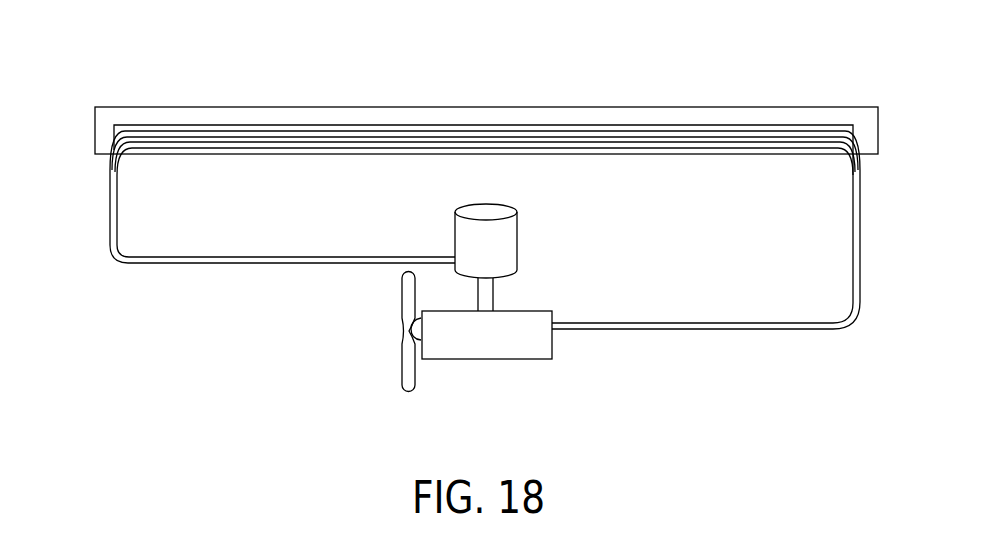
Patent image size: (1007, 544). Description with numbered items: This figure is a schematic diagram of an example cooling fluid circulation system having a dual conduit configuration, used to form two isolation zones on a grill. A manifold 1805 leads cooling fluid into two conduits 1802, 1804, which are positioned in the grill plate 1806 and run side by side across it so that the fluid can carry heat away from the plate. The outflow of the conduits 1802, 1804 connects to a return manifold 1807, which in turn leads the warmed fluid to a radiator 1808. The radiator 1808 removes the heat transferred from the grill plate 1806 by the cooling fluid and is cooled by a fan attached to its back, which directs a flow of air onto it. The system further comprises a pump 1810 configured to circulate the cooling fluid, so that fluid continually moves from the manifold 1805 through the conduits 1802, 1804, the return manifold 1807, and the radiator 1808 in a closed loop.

The conduit 1802 is at (556, 137).
The conduit 1804 is at (655, 152).
The manifold 1805 is at (101, 164).
The grill plate 1806 is at (548, 107).
The return manifold 1807 is at (868, 162).
The radiator 1808 is at (511, 344).
The pump 1810 is at (510, 259).